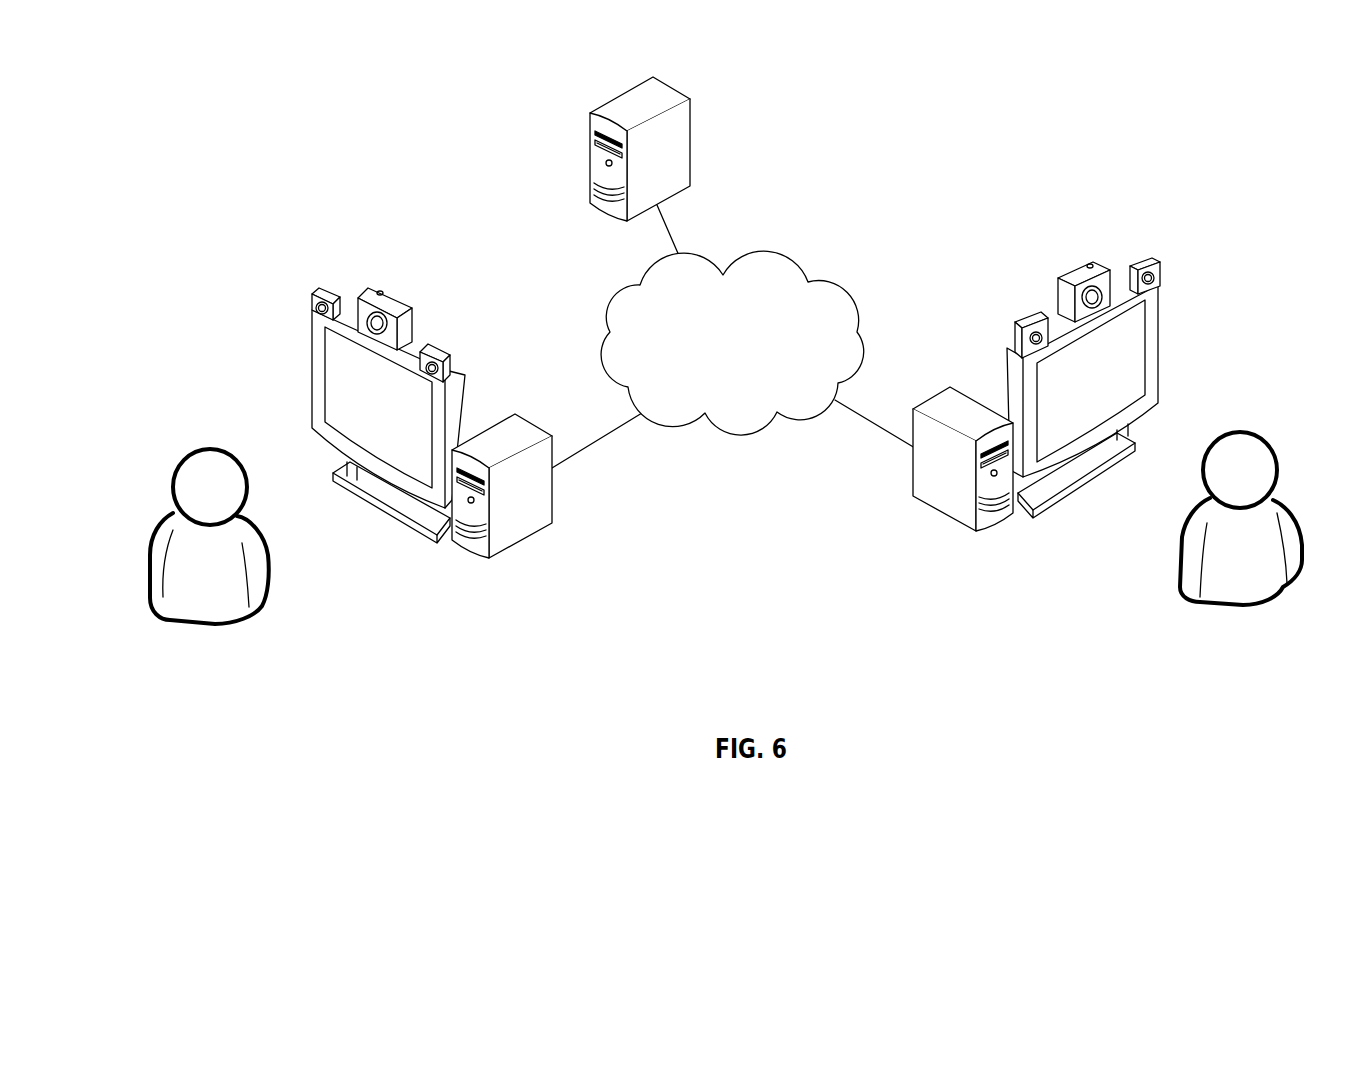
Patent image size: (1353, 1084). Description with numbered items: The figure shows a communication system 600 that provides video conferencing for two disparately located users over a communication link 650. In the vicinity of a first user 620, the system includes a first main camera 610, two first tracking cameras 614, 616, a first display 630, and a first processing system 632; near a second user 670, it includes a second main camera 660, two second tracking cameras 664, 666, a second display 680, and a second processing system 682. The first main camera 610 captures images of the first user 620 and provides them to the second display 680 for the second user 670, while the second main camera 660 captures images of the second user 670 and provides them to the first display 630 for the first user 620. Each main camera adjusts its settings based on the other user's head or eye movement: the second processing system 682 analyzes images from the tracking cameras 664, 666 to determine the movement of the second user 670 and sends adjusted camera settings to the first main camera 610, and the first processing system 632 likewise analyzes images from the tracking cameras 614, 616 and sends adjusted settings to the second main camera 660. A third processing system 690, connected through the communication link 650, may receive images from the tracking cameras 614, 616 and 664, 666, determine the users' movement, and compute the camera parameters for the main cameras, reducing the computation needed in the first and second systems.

The communication system 600 is at (726, 432).
The first main camera 610 is at (402, 302).
The first tracking camera 614 is at (443, 353).
The first tracking camera 616 is at (330, 288).
The first user 620 is at (265, 567).
The first display 630 is at (318, 325).
The first processing system 632 is at (520, 427).
The communication link 650 is at (750, 370).
The second main camera 660 is at (1070, 267).
The second tracking camera 664 is at (1028, 318).
The second tracking camera 666 is at (1142, 260).
The second user 670 is at (1188, 555).
The second display 680 is at (1012, 372).
The second processing system 682 is at (940, 405).
The third processing system 690 is at (643, 94).